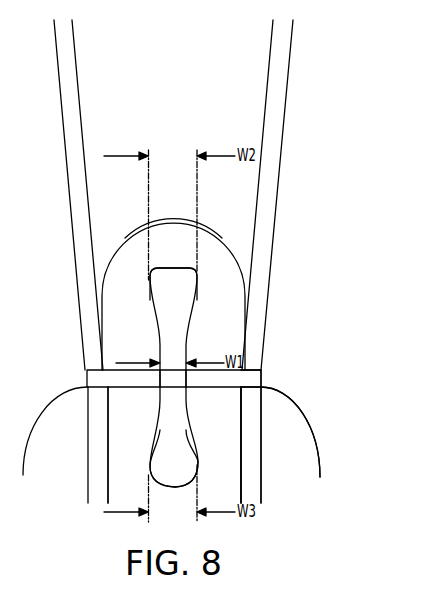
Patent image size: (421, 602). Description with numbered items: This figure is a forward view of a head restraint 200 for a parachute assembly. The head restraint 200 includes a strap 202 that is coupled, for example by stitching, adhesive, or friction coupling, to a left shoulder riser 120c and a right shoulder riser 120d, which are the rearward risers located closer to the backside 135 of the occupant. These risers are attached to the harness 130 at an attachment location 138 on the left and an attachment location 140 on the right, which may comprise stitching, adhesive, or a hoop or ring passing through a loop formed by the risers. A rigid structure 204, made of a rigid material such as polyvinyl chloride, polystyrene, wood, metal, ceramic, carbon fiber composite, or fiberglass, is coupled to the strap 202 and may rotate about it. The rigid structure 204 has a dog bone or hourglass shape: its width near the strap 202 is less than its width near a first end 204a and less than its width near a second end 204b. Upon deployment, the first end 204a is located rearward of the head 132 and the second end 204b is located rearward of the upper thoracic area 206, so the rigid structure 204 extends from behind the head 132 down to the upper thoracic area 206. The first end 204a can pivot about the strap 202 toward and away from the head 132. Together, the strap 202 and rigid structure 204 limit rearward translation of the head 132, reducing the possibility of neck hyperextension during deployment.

The left shoulder riser 120c is at (68, 96).
The right shoulder riser 120d is at (272, 141).
The harness 130 is at (93, 472).
The head 132 is at (172, 240).
The backside 135 is at (139, 437).
The attachment location 138 is at (85, 388).
The attachment location 140 is at (263, 388).
The head restraint 200 is at (143, 305).
The strap 202 is at (202, 380).
The rigid structure 204 is at (182, 307).
The first end 204a is at (183, 273).
The second end 204b is at (172, 487).
The upper thoracic area 206 is at (330, 395).